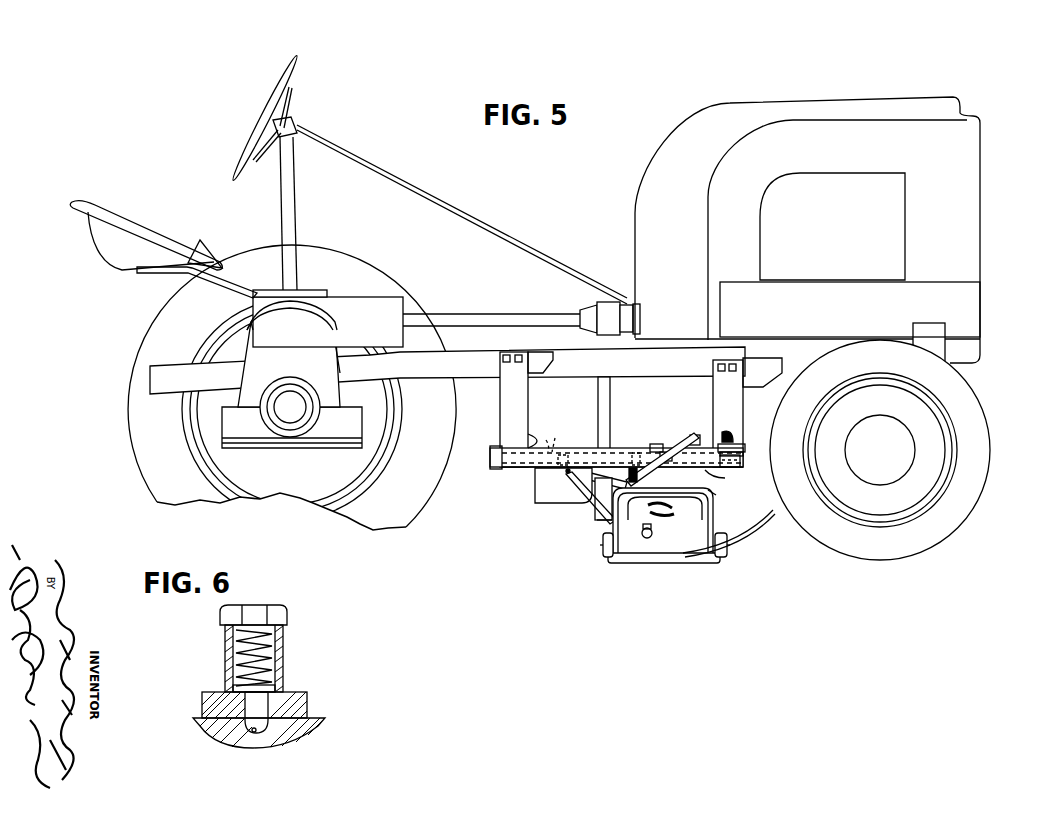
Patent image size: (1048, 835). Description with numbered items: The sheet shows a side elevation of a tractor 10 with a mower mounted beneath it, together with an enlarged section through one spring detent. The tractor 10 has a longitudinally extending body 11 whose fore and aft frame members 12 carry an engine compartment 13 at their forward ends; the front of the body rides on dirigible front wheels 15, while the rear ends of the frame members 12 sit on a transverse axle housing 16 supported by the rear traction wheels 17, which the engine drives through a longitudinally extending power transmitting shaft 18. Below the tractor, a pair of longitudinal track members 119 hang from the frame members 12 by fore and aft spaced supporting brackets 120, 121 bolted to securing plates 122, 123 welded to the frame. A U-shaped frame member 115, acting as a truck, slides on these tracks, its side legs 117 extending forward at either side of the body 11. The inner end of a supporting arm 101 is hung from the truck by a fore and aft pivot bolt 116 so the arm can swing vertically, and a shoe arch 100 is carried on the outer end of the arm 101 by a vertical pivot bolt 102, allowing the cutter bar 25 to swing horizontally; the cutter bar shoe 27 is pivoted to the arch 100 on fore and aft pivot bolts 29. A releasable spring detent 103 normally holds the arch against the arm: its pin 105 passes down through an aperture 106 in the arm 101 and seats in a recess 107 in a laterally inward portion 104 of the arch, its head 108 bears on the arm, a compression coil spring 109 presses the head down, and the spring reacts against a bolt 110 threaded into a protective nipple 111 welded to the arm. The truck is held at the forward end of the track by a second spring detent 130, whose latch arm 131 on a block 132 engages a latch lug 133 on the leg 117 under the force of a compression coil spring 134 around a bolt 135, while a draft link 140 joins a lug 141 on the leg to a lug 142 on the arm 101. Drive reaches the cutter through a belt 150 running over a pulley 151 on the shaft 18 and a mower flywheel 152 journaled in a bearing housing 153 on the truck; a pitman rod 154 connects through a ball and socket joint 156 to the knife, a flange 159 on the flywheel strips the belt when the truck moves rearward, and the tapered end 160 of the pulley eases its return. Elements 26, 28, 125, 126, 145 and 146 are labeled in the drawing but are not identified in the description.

In FIG. 5, the tractor 10 is at (990, 174).
In FIG. 5, the body 11 is at (616, 259).
In FIG. 5, the frame members 12 is at (657, 353).
In FIG. 5, the engine compartment 13 is at (810, 315).
In FIG. 5, the front wheels 15 is at (973, 425).
In FIG. 5, the axle housing 16 is at (298, 327).
In FIG. 5, the rear traction wheels 17 is at (153, 477).
In FIG. 5, the power transmitting shaft 18 is at (500, 317).
In FIG. 5, the cutter bar 25 is at (633, 561).
In FIG. 5, the seat 26 is at (112, 250).
In FIG. 5, the cutter bar shoe 27 is at (753, 533).
In FIG. 5, the roller 28 is at (720, 558).
In FIG. 5, the pivot bolts 29 is at (603, 543).
In FIG. 5, the shoe arch 100 is at (708, 502).
In FIG. 5, the supporting arm 101 is at (592, 483).
In FIG. 6, the supporting arm 101 is at (303, 695).
In FIG. 5, the vertical pivot bolt 102 is at (647, 480).
In FIG. 5, the spring detent 103 is at (630, 468).
In FIG. 6, the spring detent 103 is at (291, 637).
In FIG. 6, the laterally inwardly extending portion 104 is at (325, 720).
In FIG. 6, the pin 105 is at (273, 690).
In FIG. 6, the aperture 106 is at (258, 705).
In FIG. 6, the recess 107 is at (253, 733).
In FIG. 6, the head 108 is at (245, 687).
In FIG. 6, the compression coil spring 109 is at (237, 655).
In FIG. 6, the bolt 110 is at (255, 613).
In FIG. 6, the nipple 111 is at (282, 657).
In FIG. 5, the U-shaped frame member 115 is at (563, 460).
In FIG. 5, the pivot bolt 116 is at (567, 472).
In FIG. 5, the side legs 117 is at (635, 453).
In FIG. 5, the track members 119 is at (720, 473).
In FIG. 5, the supporting bracket 120 is at (723, 382).
In FIG. 5, the supporting bracket 121 is at (510, 402).
In FIG. 5, the securing plate 122 is at (762, 365).
In FIG. 5, the securing plate 123 is at (543, 367).
In FIG. 5, the hidden slot 125 is at (548, 452).
In FIG. 5, the hidden hole 126 is at (557, 437).
In FIG. 5, the spring detent 130 is at (705, 429).
In FIG. 5, the latch arm 131 is at (740, 448).
In FIG. 5, the block 132 is at (743, 457).
In FIG. 5, the latch lug 133 is at (713, 492).
In FIG. 5, the compression coil spring 134 is at (738, 437).
In FIG. 5, the bolt 135 is at (732, 438).
In FIG. 5, the draft link 140 is at (663, 453).
In FIG. 5, the lug 141 is at (683, 437).
In FIG. 5, the lug 142 is at (595, 505).
In FIG. 5, the stop 145 is at (653, 447).
In FIG. 5, the support bar 146 is at (527, 433).
In FIG. 5, the belt 150 is at (606, 390).
In FIG. 5, the pulley 151 is at (613, 307).
In FIG. 5, the mower flywheel 152 is at (597, 523).
In FIG. 5, the bearing housing 153 is at (545, 477).
In FIG. 5, the pitman rod 154 is at (667, 510).
In FIG. 5, the ball and socket joint 156 is at (657, 532).
In FIG. 5, the flange 159 is at (613, 533).
In FIG. 5, the tapered end 160 is at (585, 312).